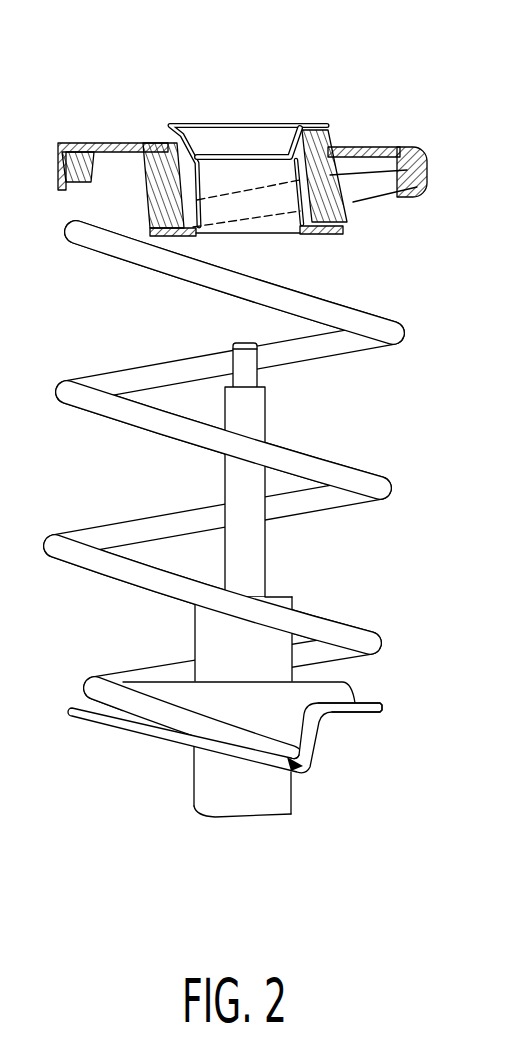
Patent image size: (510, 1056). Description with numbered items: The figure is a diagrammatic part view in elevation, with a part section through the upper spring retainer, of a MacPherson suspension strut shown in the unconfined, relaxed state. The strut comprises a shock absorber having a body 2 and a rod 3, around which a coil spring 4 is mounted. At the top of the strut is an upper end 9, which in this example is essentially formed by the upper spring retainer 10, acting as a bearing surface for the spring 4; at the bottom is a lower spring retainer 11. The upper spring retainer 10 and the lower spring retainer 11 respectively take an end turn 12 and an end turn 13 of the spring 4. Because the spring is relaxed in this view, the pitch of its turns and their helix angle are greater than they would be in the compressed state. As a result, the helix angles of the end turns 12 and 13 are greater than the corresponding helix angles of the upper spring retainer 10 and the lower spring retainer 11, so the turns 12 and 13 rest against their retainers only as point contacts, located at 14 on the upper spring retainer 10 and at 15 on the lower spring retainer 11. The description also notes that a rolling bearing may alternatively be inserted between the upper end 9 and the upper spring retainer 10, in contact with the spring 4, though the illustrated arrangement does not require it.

The body 2 is at (243, 793).
The rod 3 is at (256, 548).
The spring 4 is at (378, 488).
The upper end 9 is at (262, 142).
The upper spring retainer 10 is at (378, 145).
The lower spring retainer 11 is at (375, 708).
The end turn 12 is at (380, 190).
The end turn 13 is at (284, 745).
The point contact 14 is at (414, 186).
The point contact 15 is at (305, 772).